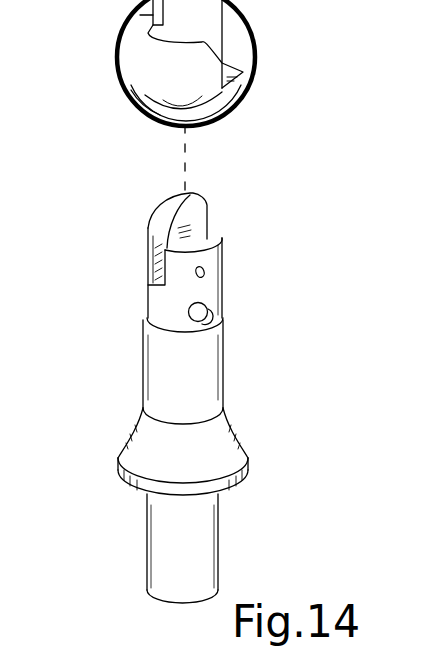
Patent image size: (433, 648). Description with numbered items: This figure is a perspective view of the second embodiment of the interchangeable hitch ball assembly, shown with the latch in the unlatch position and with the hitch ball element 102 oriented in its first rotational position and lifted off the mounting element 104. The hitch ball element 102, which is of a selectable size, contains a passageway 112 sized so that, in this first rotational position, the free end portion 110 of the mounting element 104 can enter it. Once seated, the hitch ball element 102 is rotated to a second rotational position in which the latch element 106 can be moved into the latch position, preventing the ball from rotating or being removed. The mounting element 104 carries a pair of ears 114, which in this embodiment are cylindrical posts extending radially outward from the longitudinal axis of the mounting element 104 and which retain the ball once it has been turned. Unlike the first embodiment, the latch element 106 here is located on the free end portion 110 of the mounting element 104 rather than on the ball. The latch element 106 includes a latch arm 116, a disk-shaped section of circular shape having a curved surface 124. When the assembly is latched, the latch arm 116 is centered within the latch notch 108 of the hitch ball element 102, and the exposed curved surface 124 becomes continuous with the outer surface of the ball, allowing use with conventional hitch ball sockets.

The hitch ball element 102 is at (272, 80).
The mounting element 104 is at (250, 423).
The latch element 106 is at (251, 232).
The latch notch 108 is at (223, 47).
The free end portion 110 is at (233, 277).
The passageway 112 is at (155, 133).
The ears 114 is at (223, 323).
The latch arm 116 is at (195, 210).
The curved surface 124 is at (150, 252).